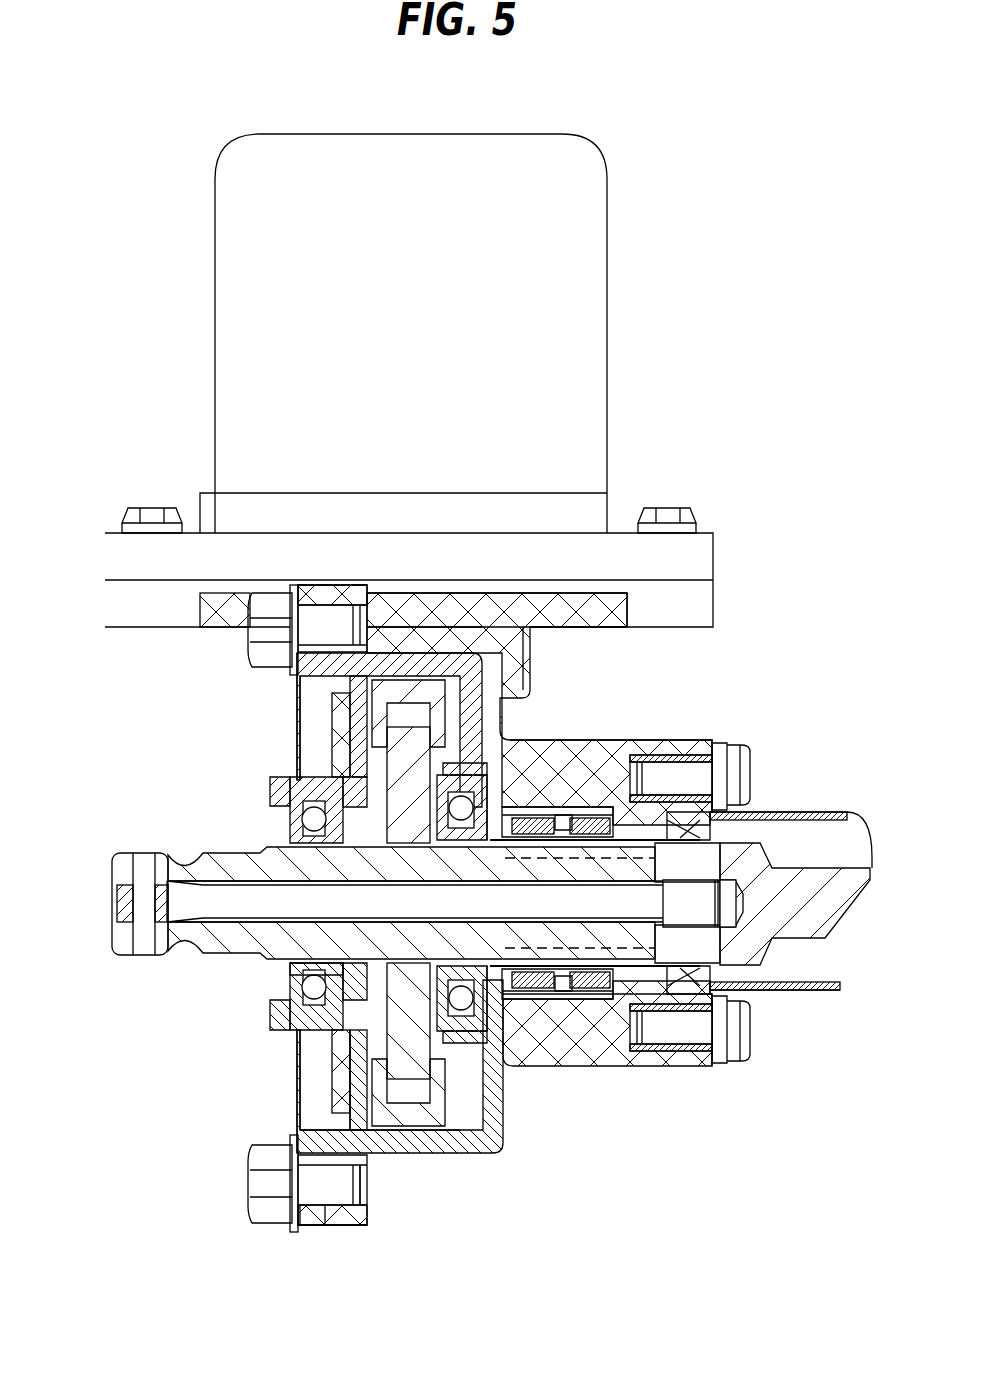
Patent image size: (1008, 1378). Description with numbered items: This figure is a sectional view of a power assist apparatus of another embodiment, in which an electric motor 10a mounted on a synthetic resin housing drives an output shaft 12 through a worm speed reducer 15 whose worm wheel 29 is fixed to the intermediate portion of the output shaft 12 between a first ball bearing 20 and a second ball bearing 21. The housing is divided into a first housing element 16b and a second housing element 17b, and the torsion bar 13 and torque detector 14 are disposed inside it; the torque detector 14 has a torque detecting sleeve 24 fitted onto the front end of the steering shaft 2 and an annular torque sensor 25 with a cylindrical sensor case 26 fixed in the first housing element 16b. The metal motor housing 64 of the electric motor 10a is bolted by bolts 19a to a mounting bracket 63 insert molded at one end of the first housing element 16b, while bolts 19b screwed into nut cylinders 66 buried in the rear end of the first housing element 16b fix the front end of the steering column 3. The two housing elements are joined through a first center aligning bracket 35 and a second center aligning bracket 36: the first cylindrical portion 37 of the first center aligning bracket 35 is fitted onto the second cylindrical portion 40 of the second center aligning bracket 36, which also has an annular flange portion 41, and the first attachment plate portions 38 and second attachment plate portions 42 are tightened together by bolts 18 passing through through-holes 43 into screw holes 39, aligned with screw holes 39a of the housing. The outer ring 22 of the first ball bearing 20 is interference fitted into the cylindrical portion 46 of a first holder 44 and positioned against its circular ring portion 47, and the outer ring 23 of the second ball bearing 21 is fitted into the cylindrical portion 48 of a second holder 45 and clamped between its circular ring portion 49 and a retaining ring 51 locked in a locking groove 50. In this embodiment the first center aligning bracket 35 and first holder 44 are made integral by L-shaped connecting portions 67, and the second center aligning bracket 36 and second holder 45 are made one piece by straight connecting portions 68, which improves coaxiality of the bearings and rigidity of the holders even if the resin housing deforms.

The steering shaft 2 is at (777, 923).
The steering column 3 is at (808, 812).
The electric motor 10a is at (553, 212).
The output shaft 12 is at (240, 876).
The torsion bar 13 is at (222, 900).
The torque detector 14 is at (592, 1000).
The worm speed reducer 15 is at (452, 610).
The first housing element 16b is at (640, 625).
The second housing element 17b is at (340, 733).
The bolt 18 is at (262, 635).
The bolt 19a is at (143, 523).
The bolt 19b is at (742, 770).
The first ball bearing 20 is at (528, 780).
The second ball bearing 21 is at (302, 820).
The outer ring 22 is at (463, 1012).
The outer ring 23 is at (292, 1012).
The torque detecting sleeve 24 is at (556, 992).
The torque sensor 25 is at (600, 810).
The sensor case 26 is at (568, 812).
The worm wheel 29 is at (415, 1085).
The first center aligning bracket 35 is at (300, 588).
The second center aligning bracket 36 is at (300, 632).
The first cylindrical portion 37 is at (362, 1160).
The first attachment plate portion 38 is at (328, 1225).
The screw hole 39 is at (333, 598).
The screw hole 39a is at (372, 648).
The second cylindrical portion 40 is at (305, 1110).
The flange portion 41 is at (315, 1132).
The second attachment plate portion 42 is at (305, 1225).
The through-hole 43 is at (294, 660).
The first holder 44 is at (600, 600).
The second holder 45 is at (298, 773).
The cylindrical portion 46 is at (457, 1045).
The circular ring portion 47 is at (480, 1005).
The cylindrical portion 48 is at (300, 1025).
The circular ring portion 49 is at (295, 1000).
The locking groove 50 is at (320, 1035).
The retaining ring 51 is at (348, 992).
The mounting bracket 63 is at (132, 604).
The motor housing 64 is at (285, 247).
The nut cylinder 66 is at (688, 745).
The connecting portion 67 is at (497, 650).
The connecting portion 68 is at (405, 678).